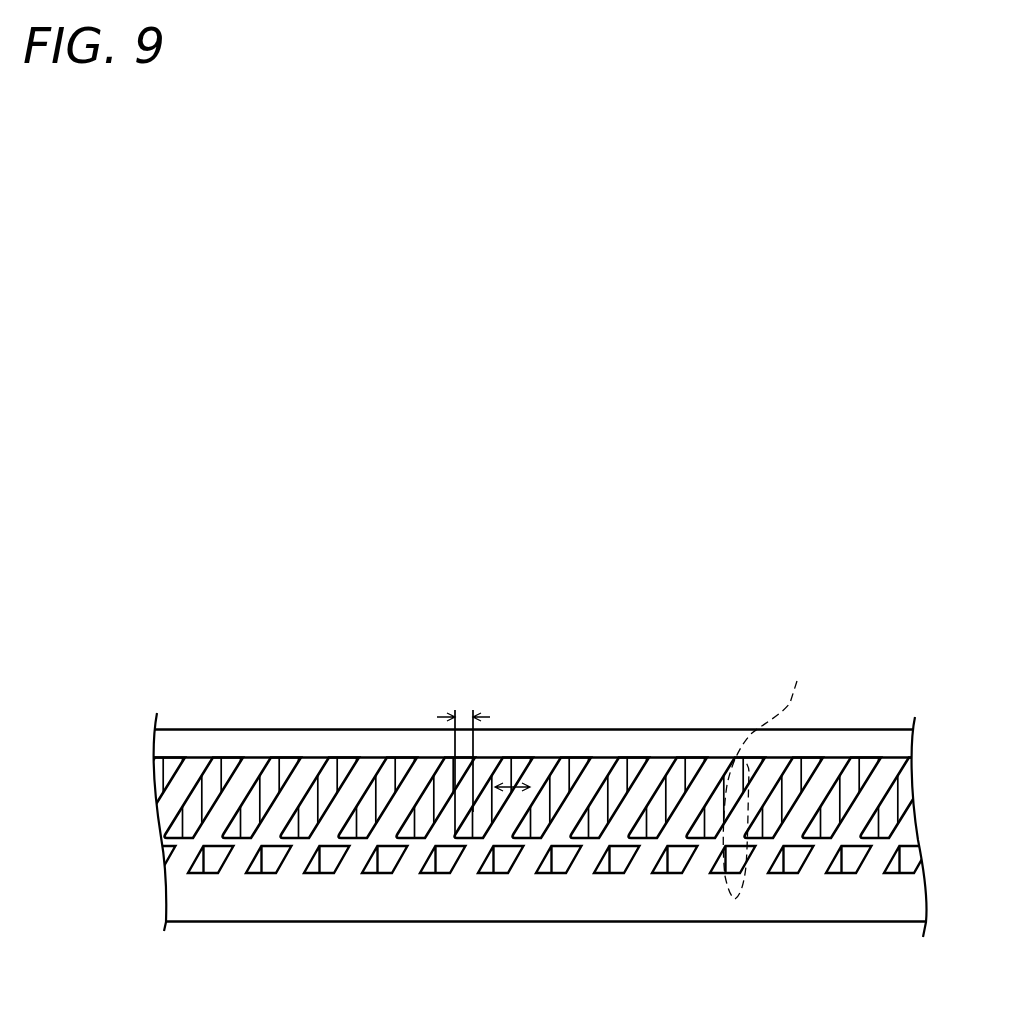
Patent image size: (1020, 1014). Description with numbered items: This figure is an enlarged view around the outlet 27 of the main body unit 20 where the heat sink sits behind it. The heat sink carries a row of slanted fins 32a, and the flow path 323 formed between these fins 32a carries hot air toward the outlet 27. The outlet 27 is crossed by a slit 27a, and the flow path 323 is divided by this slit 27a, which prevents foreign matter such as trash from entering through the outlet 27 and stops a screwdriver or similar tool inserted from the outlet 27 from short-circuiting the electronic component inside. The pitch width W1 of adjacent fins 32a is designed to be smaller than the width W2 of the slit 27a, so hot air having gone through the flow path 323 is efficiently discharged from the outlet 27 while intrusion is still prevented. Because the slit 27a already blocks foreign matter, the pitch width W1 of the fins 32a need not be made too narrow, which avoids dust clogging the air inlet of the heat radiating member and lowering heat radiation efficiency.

The main body unit 20 is at (818, 747).
The outlet 27 is at (552, 821).
The slit 27a is at (598, 815).
The fin 32a is at (633, 788).
The flow path 323 is at (771, 770).
The pitch width of adjacent fins W1 is at (466, 712).
The width of the slit W2 is at (510, 787).